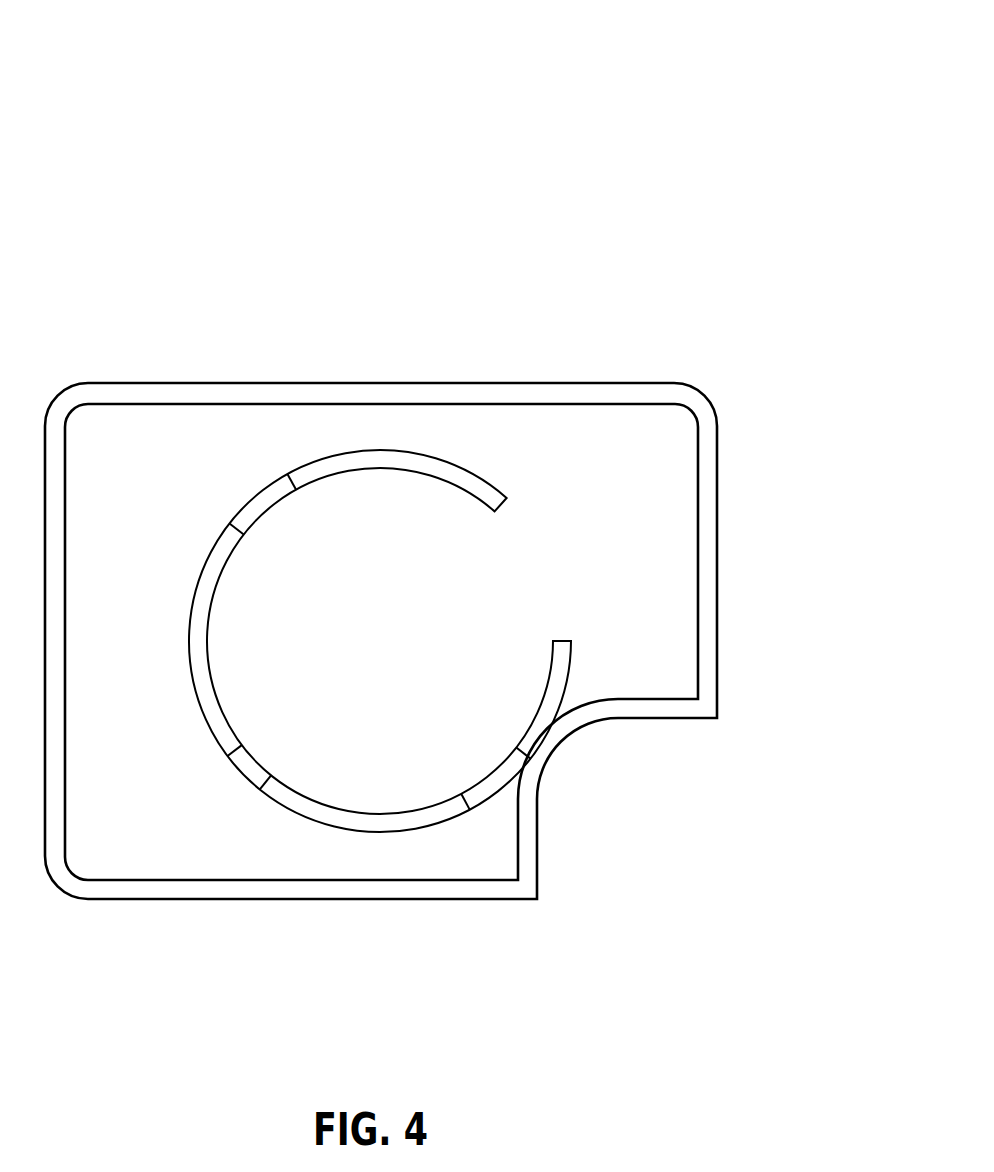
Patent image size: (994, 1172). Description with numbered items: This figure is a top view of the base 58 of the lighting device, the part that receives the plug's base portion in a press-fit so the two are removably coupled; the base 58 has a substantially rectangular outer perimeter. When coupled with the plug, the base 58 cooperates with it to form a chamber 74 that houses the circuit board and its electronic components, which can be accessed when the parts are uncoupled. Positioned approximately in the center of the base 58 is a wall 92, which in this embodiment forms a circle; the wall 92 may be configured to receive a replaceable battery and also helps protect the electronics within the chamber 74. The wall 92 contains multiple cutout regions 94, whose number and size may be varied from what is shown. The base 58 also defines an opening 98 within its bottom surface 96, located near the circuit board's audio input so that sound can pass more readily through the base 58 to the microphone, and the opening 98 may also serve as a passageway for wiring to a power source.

The base 58 is at (437, 531).
The chamber 74 is at (510, 432).
The wall 92 is at (339, 438).
The cutout regions 94 is at (248, 503).
The bottom surface 96 is at (651, 426).
The opening 98 is at (599, 828).